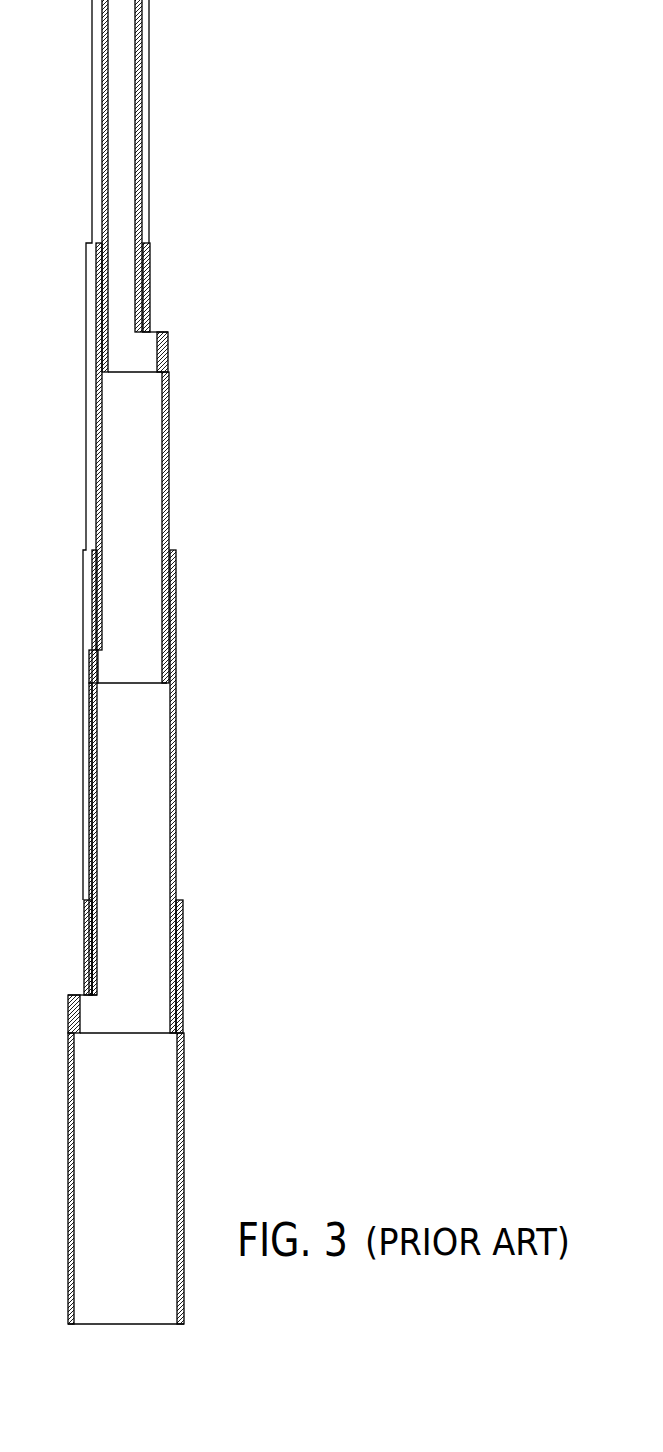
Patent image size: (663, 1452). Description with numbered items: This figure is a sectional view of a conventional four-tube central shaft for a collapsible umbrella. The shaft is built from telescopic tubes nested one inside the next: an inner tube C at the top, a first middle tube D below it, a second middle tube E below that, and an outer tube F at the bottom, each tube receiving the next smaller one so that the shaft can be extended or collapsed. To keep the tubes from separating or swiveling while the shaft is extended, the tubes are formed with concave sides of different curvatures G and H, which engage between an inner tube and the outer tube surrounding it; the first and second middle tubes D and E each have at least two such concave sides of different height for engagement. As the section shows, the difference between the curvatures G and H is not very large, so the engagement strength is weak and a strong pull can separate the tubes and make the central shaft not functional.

The inner tube C is at (145, 163).
The first middle tube D is at (169, 430).
The second middle tube E is at (176, 728).
The outer tube F is at (184, 1052).
The concave side of first curvature G is at (100, 478).
The concave side of second curvature H is at (98, 667).